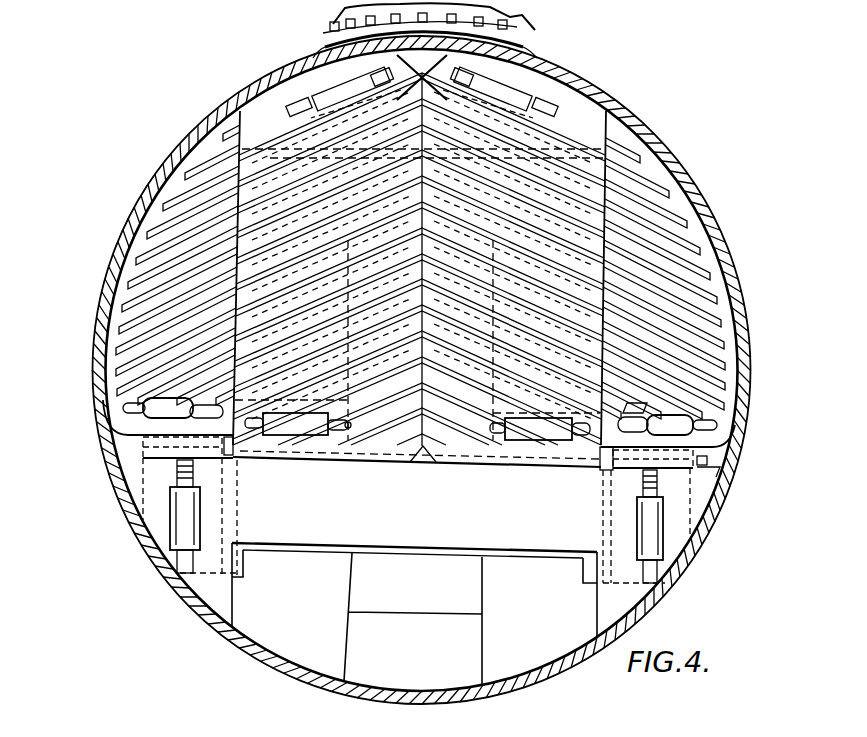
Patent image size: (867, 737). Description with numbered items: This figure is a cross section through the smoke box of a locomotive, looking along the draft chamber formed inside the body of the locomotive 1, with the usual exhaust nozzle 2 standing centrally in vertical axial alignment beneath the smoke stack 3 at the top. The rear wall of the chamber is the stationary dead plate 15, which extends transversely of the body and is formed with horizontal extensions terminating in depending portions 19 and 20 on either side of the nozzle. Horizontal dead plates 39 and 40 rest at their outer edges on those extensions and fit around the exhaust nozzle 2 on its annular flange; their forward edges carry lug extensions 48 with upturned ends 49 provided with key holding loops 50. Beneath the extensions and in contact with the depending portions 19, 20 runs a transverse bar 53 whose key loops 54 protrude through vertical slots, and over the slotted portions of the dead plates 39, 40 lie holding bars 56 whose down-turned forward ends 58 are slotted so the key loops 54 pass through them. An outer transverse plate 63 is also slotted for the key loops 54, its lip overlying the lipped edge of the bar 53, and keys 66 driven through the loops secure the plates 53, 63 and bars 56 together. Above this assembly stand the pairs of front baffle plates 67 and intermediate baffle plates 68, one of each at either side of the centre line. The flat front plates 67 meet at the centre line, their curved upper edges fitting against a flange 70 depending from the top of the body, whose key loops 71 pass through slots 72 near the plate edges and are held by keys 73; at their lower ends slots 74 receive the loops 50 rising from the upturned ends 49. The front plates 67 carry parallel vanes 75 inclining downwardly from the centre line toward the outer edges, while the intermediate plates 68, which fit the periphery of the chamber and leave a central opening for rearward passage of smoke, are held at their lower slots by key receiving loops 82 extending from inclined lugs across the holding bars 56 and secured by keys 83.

The body of the locomotive 1 is at (122, 238).
The exhaust nozzle 2 is at (467, 632).
The smoke stack 3 is at (517, 27).
The stationary dead plate 15 is at (130, 437).
The depending portion 19 is at (615, 605).
The depending portion 20 is at (227, 603).
The horizontal dead plate 39 is at (712, 462).
The horizontal dead plate 40 is at (148, 458).
The lug extension 48 is at (463, 462).
The upturned end 49 is at (478, 437).
The key holding loop 50 is at (550, 432).
The transverse bar 53 is at (563, 560).
The key loop 54 is at (653, 540).
The holding bar 56 is at (737, 426).
The down-turned forward end 58 is at (705, 465).
The outer transverse plate 63 is at (447, 533).
The key 66 is at (657, 490).
The front baffle plate 67 is at (466, 398).
The intermediate baffle plate 68 is at (715, 384).
The flange 70 is at (332, 36).
The key loop 71 is at (587, 80).
The slot 72 is at (560, 77).
The key 73 is at (552, 112).
The slot 74 is at (560, 440).
The parallel vane 75 is at (490, 445).
The key receiving loop 82 is at (680, 422).
The key 83 is at (710, 422).